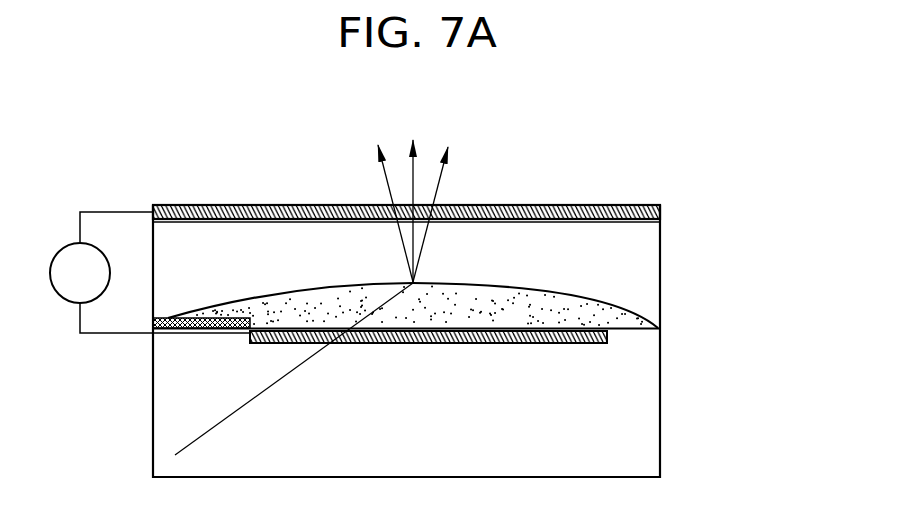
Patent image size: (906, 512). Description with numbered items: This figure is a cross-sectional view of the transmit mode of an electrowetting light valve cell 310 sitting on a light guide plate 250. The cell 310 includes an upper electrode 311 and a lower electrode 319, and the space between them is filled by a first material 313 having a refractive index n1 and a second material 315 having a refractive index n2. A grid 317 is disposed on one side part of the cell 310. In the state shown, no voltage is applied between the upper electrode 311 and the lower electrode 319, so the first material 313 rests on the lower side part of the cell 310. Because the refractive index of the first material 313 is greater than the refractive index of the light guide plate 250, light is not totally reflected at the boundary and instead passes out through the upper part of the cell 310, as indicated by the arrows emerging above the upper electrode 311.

The light guide plate 250 is at (648, 398).
The electrowetting light valve cell 310 is at (483, 266).
The upper electrode 311 is at (660, 207).
The first material 313 is at (633, 308).
The second material 315 is at (643, 253).
The grid 317 is at (152, 323).
The lower electrode 319 is at (446, 335).